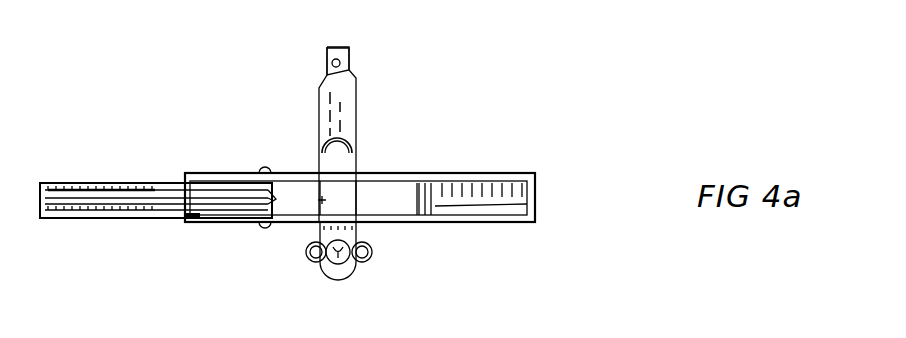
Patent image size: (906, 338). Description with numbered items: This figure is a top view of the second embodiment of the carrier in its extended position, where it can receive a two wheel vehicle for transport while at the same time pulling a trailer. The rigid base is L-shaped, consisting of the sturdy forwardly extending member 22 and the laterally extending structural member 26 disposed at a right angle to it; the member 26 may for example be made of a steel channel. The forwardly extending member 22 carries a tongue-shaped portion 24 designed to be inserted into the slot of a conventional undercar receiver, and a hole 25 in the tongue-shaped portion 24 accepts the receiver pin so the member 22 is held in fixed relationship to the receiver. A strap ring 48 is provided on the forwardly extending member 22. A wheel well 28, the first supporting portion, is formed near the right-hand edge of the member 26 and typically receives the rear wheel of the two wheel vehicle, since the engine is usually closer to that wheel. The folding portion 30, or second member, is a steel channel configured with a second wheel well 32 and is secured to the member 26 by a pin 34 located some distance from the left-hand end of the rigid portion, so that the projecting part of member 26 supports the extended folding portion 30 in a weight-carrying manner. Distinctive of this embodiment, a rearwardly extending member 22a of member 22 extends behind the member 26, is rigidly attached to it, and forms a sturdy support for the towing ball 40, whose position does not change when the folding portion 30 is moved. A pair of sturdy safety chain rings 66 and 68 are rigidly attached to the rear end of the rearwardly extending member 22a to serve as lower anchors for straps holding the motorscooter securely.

The forwardly extending member 22 is at (344, 97).
The rearwardly extending member 22a is at (318, 228).
The tongue-shaped portion 24 is at (343, 78).
The hole 25 is at (332, 61).
The laterally extending structural member 26 is at (388, 178).
The wheel well 28 is at (491, 183).
The folding portion 30 is at (136, 186).
The wheel well 32 is at (102, 193).
The pin 34 is at (264, 167).
The towing ball 40 is at (335, 266).
The strap ring 48 is at (350, 145).
The safety chain ring 66 is at (310, 259).
The safety chain ring 68 is at (369, 259).